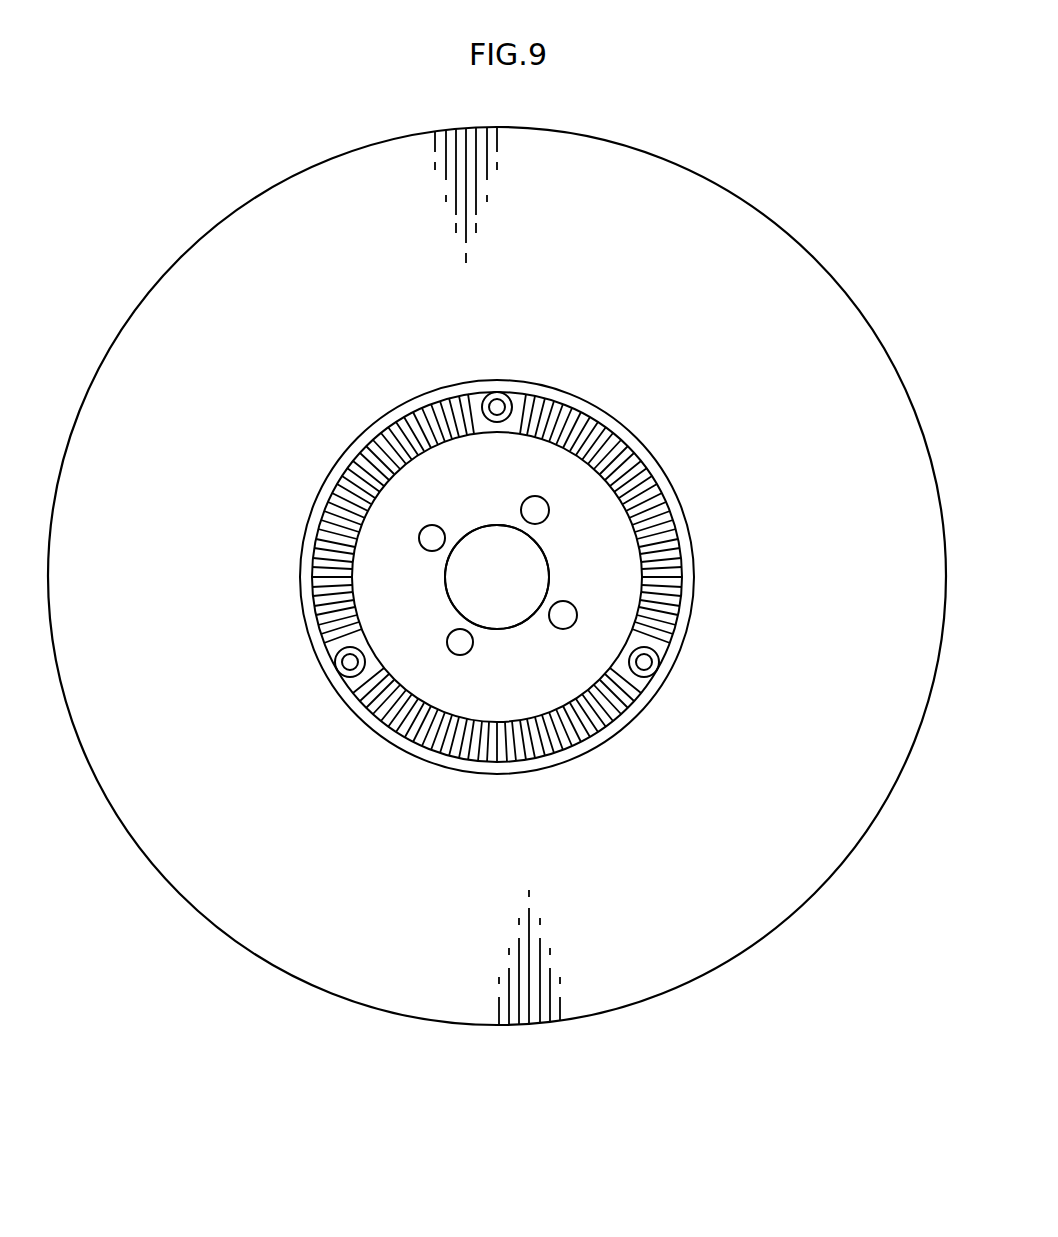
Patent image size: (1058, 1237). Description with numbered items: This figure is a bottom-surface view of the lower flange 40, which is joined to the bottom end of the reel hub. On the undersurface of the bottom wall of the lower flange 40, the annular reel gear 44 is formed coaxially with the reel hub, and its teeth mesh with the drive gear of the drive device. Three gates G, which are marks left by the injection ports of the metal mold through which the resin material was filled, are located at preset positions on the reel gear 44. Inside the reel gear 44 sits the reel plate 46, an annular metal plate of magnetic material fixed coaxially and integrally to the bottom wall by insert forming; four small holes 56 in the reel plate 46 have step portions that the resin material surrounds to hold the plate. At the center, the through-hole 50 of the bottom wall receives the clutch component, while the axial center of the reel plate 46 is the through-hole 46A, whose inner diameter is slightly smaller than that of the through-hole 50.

The lower flange 40 is at (818, 305).
The reel gear 44 is at (648, 523).
The reel plate 46 is at (522, 470).
The through-hole 46A is at (560, 665).
The through-hole 50 is at (512, 614).
The small holes 56 is at (468, 655).
The gate G is at (497, 398).